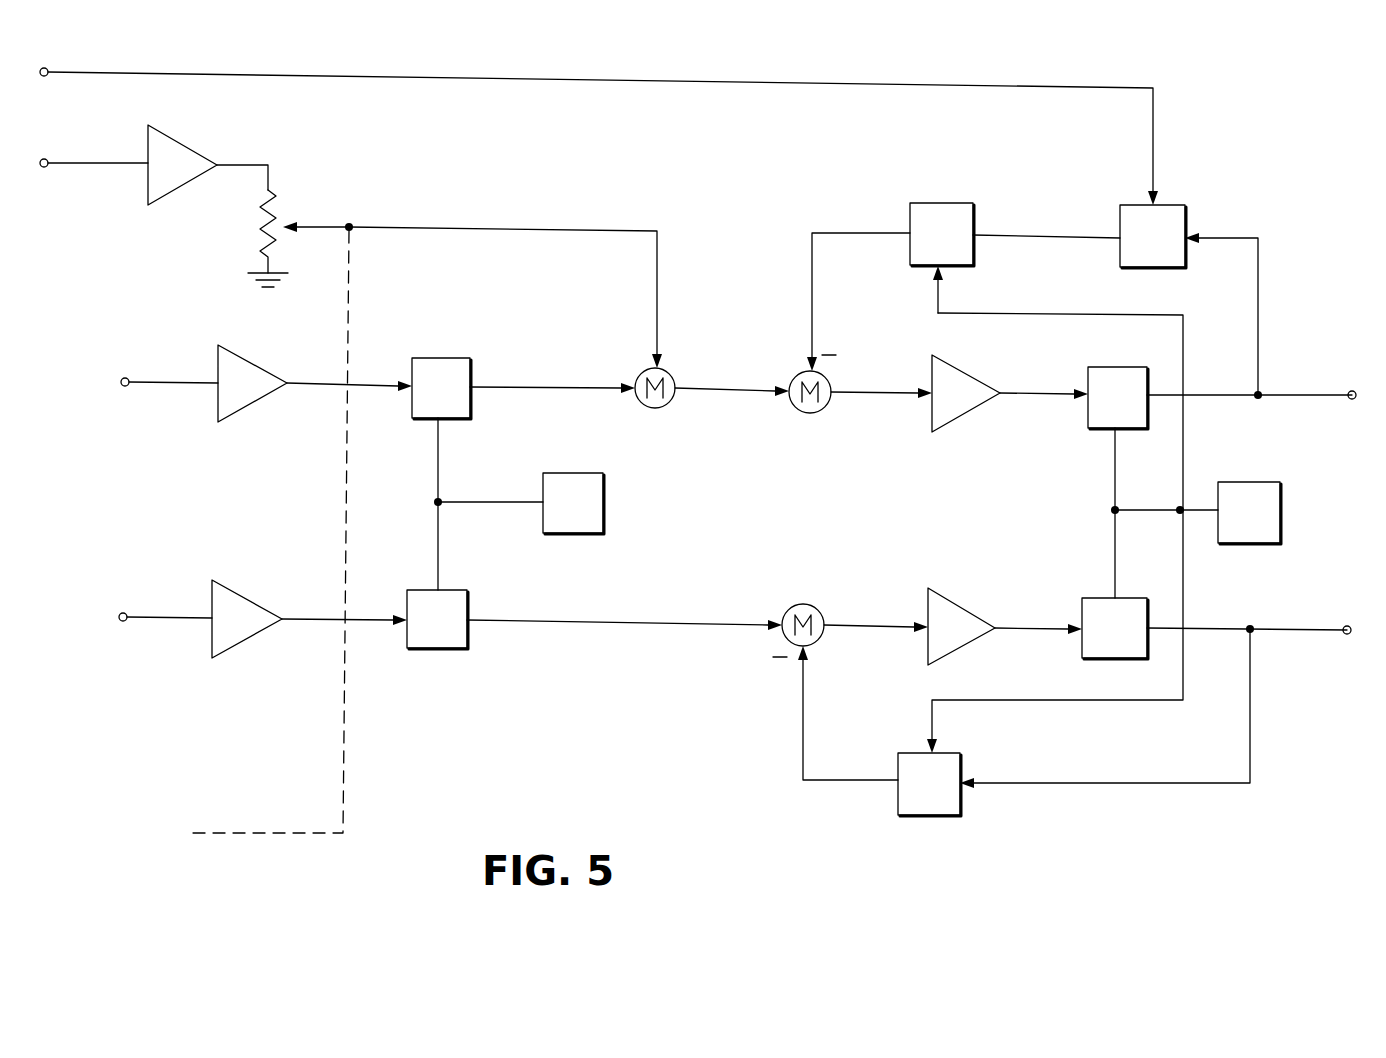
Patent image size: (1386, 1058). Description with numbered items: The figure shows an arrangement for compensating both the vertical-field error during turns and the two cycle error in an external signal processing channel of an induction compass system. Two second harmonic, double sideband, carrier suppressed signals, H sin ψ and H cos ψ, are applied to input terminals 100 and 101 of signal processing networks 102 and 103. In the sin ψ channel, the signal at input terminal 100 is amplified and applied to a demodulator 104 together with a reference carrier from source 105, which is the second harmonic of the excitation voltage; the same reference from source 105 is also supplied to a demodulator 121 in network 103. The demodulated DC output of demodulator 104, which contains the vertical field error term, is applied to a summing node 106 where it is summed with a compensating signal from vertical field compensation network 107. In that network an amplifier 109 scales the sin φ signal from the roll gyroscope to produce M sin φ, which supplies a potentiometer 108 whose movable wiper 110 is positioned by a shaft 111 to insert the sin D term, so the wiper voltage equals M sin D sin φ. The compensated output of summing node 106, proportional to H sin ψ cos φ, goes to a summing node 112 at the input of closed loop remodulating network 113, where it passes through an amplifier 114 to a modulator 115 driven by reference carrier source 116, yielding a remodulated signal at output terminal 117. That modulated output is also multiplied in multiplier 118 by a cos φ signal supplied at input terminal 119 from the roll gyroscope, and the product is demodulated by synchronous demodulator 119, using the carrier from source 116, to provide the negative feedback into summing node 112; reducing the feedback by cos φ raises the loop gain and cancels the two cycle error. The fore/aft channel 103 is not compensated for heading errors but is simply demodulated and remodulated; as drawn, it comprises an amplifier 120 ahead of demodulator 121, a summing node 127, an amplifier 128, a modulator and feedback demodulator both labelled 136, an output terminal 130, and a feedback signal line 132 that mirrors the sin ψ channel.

The input terminal 100 is at (125, 378).
The input terminal 101 is at (118, 617).
The signal processing network 102 is at (745, 445).
The signal processing network 103 is at (240, 356).
The demodulator 104 is at (523, 380).
The reference carrier source 105 is at (603, 520).
The summing node 106 is at (675, 378).
The vertical field compensation network 107 is at (423, 270).
The potentiometer 108 is at (262, 238).
The amplifier 109 is at (198, 177).
The movable wiper 110 is at (289, 216).
The shaft 111 is at (346, 312).
The summing node 112 is at (810, 413).
The closed loop remodulating network 113 is at (1035, 370).
The amplifier 114 is at (957, 422).
The modulator 115 is at (1095, 367).
The reference carrier source 116 is at (1242, 543).
The output terminal 117 is at (1352, 388).
The multiplier 118 is at (1188, 213).
The synchronous demodulator 119 is at (1000, 195).
The amplifier 120 is at (230, 648).
The demodulator 121 is at (435, 648).
The summing circuit 127 is at (815, 643).
The amplifier 128 is at (973, 610).
The output terminal 130 is at (1347, 637).
The feedback signal line 132 is at (1013, 835).
The modulator / demodulator 136 is at (1098, 658).